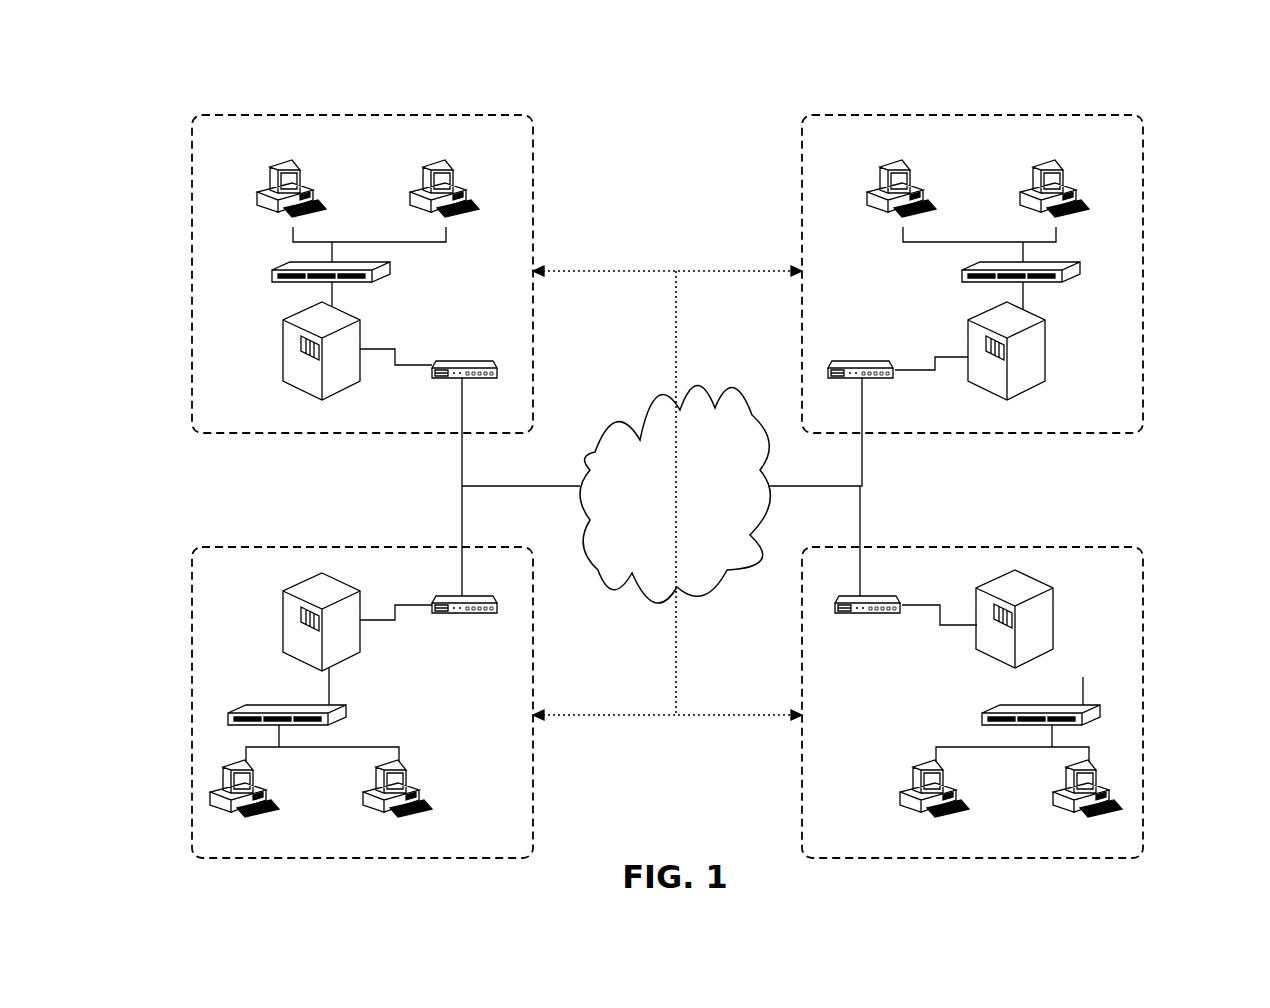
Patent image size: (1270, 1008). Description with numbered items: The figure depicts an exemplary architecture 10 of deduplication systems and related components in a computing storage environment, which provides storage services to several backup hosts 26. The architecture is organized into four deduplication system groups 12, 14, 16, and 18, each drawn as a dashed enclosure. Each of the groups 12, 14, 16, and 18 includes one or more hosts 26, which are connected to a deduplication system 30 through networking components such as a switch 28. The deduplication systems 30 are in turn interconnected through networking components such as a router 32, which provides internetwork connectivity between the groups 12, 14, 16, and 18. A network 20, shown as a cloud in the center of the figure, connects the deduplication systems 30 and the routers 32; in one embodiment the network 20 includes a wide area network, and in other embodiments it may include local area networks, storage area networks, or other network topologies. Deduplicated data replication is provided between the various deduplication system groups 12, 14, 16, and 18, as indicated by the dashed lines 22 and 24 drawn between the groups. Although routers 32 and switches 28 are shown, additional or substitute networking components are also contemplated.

The architecture 10 is at (1181, 82).
The deduplication system group 12 is at (533, 133).
The deduplication system group 14 is at (533, 618).
The deduplication system group 16 is at (1143, 133).
The deduplication system group 18 is at (1143, 567).
The network 20 is at (695, 388).
The dashed line 22 is at (572, 273).
The dashed line 24 is at (692, 715).
The backup host 26 is at (302, 181).
The switch 28 is at (385, 278).
The deduplication system 30 is at (278, 323).
The router 32 is at (440, 378).